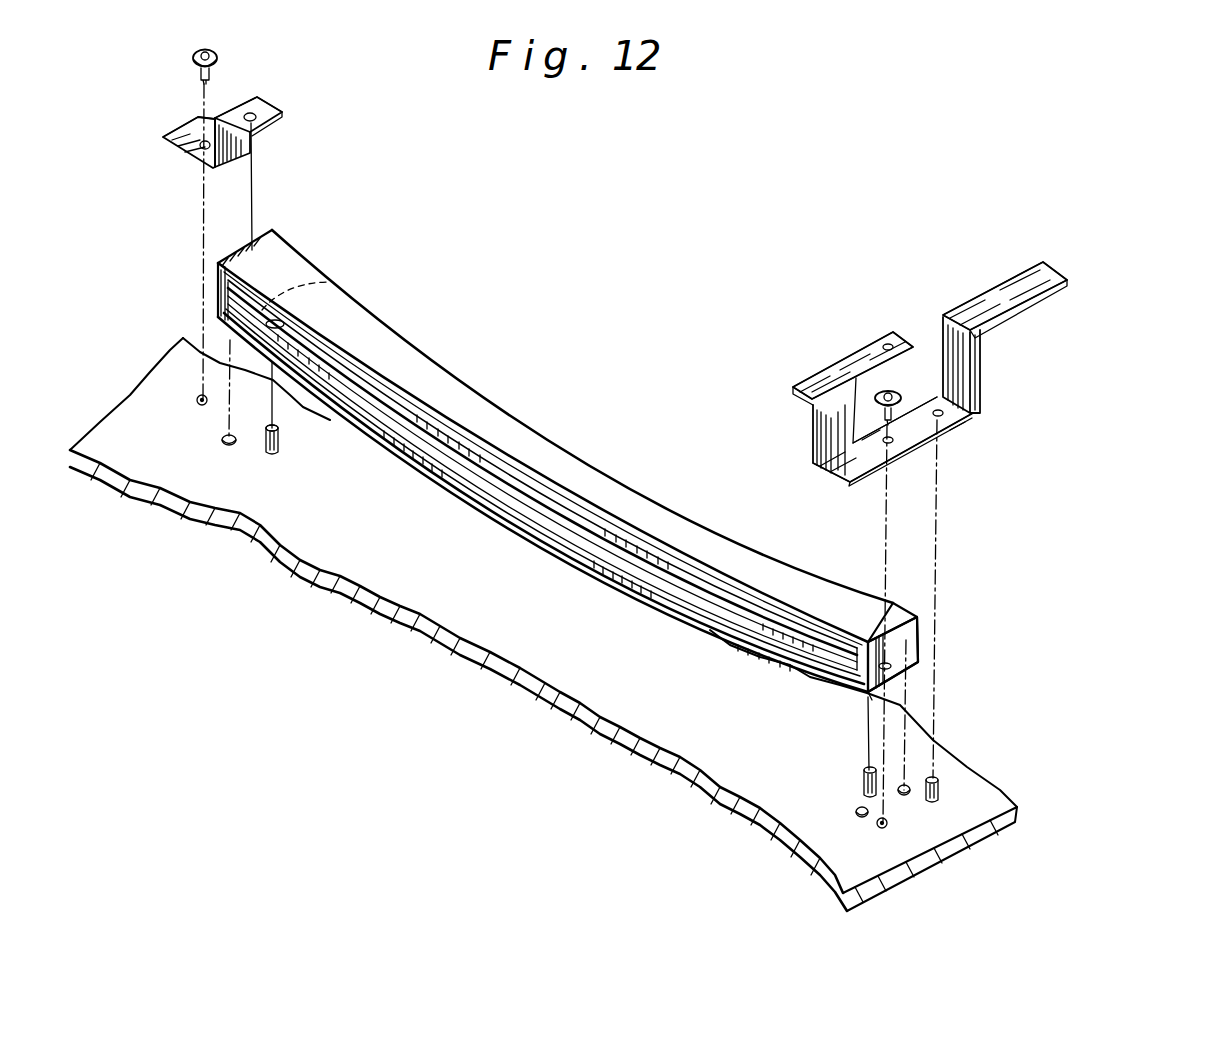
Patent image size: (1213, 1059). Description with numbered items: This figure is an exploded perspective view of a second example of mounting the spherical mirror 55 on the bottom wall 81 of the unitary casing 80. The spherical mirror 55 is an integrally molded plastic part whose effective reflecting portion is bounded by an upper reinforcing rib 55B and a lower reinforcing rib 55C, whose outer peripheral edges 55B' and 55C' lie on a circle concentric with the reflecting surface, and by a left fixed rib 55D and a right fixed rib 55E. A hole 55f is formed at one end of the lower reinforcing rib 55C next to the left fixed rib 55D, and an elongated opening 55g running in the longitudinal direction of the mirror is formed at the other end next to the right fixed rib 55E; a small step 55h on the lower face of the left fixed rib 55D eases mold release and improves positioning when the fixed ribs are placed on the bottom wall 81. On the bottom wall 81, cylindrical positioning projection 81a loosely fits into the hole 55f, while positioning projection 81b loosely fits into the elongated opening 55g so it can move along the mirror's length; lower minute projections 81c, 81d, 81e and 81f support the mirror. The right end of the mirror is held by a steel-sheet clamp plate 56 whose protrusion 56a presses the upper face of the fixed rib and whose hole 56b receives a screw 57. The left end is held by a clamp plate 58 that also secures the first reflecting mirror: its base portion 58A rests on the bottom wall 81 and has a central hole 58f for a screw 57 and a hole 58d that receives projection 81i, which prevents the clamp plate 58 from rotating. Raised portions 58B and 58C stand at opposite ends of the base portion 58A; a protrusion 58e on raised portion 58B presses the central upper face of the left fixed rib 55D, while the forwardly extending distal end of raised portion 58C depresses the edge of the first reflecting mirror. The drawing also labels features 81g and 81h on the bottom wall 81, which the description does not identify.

The spherical mirror 55 is at (440, 367).
The upper reinforcing rib 55B is at (543, 454).
The outer peripheral edge of upper reinforcing rib 55B' is at (542, 464).
The lower reinforcing rib 55C is at (542, 476).
The outer peripheral edge of lower reinforcing rib 55C' is at (544, 496).
The left fixed rib 55D is at (858, 655).
The right fixed rib 55E is at (217, 297).
The hole 55f is at (870, 668).
The elongated opening 55g is at (327, 282).
The small step 55h is at (887, 683).
The clamp plate 56 is at (268, 98).
The protrusion 56a is at (268, 127).
The hole 56b is at (183, 158).
The screw 57 is at (193, 56).
The clamp plate 58 is at (1033, 314).
The base portion 58A is at (860, 460).
The raised portion 58B is at (820, 378).
The raised portion 58C is at (1043, 272).
The hole 58d is at (947, 417).
The protrusion 58e is at (885, 340).
The hole 58f is at (893, 445).
The unitary casing 80 is at (507, 707).
The bottom wall 81 is at (477, 612).
The positioning projection 81a is at (862, 780).
The positioning projection 81b is at (281, 436).
The minute projection 81c is at (906, 786).
The minute projection 81d is at (857, 811).
The minute projection 81e is at (265, 421).
The minute projection 81f is at (222, 444).
The screw hole in base plate 81g is at (886, 826).
The screw hole in base plate 81h is at (196, 400).
The projection 81i is at (942, 790).